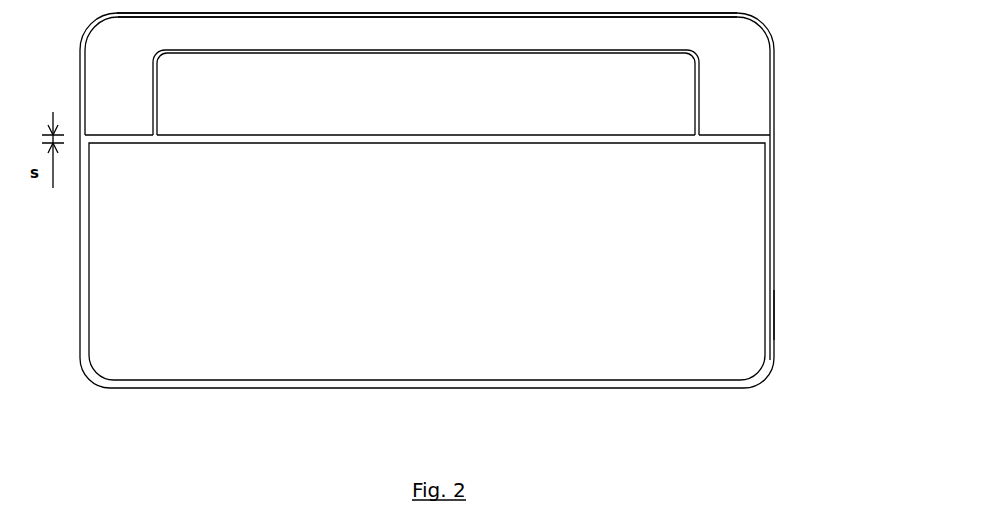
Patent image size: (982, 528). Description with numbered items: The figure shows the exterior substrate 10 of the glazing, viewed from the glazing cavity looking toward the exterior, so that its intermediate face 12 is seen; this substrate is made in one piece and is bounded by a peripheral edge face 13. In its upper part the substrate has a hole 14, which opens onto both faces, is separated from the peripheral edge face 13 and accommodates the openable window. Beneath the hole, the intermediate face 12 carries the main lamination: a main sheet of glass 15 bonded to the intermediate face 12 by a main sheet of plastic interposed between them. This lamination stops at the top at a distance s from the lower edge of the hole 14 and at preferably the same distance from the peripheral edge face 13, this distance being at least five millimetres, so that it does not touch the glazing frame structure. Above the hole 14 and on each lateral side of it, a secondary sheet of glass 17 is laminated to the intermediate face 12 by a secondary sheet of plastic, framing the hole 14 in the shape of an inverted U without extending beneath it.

The exterior substrate 10 is at (770, 243).
The intermediate face 12 is at (771, 186).
The peripheral edge face 13 is at (774, 288).
The hole 14 is at (404, 111).
The main sheet of glass 15 is at (416, 256).
The secondary sheet of glass 17 is at (404, 41).